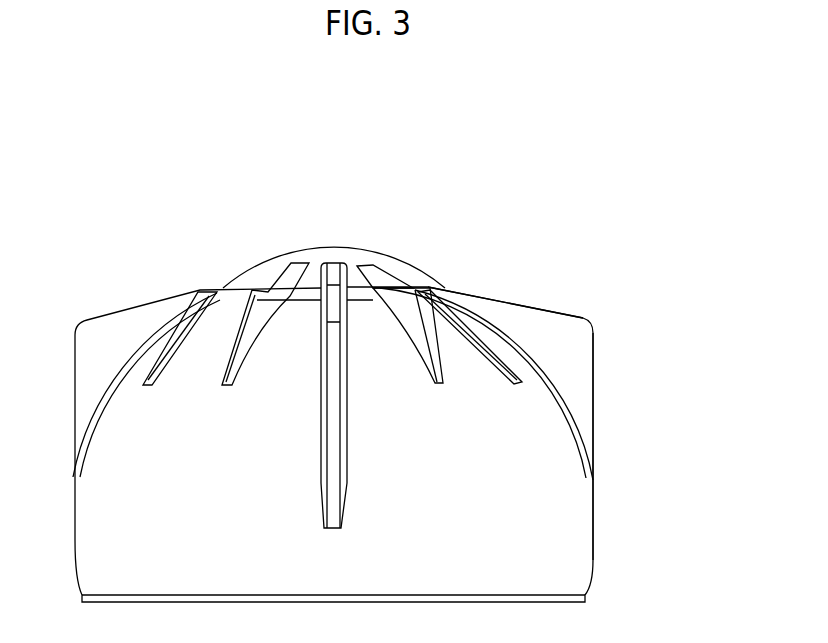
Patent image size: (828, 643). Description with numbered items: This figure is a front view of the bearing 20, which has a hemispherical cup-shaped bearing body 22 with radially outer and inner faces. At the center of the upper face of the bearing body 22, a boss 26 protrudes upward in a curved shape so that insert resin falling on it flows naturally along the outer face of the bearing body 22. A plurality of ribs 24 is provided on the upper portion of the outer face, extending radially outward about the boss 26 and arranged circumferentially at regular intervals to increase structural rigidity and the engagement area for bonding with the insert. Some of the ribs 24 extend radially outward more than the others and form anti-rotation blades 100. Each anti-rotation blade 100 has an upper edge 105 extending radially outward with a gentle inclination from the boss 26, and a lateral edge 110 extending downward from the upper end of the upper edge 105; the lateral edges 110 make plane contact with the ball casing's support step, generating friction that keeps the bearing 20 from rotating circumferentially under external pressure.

The bearing 20 is at (185, 196).
The bearing body 22 is at (583, 546).
The ribs 24 is at (432, 288).
The boss 26 is at (283, 266).
The anti-rotation blades 100 is at (105, 327).
The upper edge 105 is at (565, 313).
The lateral edge 110 is at (593, 358).